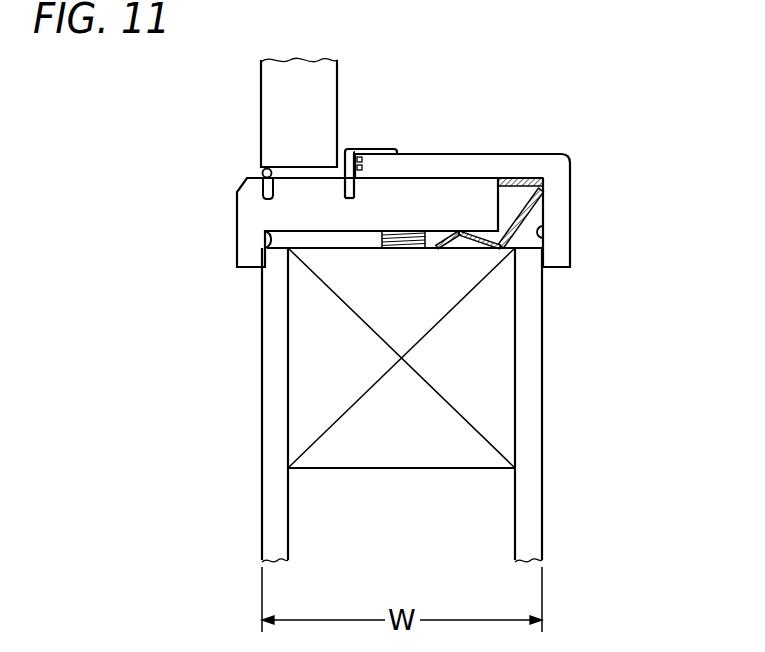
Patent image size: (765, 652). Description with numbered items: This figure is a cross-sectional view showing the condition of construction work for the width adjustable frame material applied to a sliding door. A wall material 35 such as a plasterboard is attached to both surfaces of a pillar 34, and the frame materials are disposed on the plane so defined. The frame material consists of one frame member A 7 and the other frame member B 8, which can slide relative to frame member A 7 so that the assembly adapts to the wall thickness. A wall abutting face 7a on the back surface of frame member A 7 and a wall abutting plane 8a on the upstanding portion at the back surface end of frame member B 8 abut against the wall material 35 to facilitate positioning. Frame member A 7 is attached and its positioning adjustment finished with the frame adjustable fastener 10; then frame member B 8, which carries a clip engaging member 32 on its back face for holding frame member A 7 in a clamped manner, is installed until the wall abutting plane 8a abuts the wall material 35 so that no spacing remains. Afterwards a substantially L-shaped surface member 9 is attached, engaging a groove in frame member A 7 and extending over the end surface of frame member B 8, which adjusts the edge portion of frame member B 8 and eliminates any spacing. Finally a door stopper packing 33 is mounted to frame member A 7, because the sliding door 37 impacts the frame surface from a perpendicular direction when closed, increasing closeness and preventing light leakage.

The frame member A 7 is at (260, 217).
The wall abutting face 7a is at (262, 258).
The frame member B 8 is at (480, 160).
The wall abutting plane 8a is at (541, 235).
The surface member 9 is at (377, 152).
The frame adjustable fastener 10 is at (392, 250).
The clip engaging member 32 is at (543, 195).
The door stopper packing 33 is at (266, 172).
The pillar 34 is at (317, 397).
The wall material 35 is at (275, 353).
The door 37 is at (320, 87).